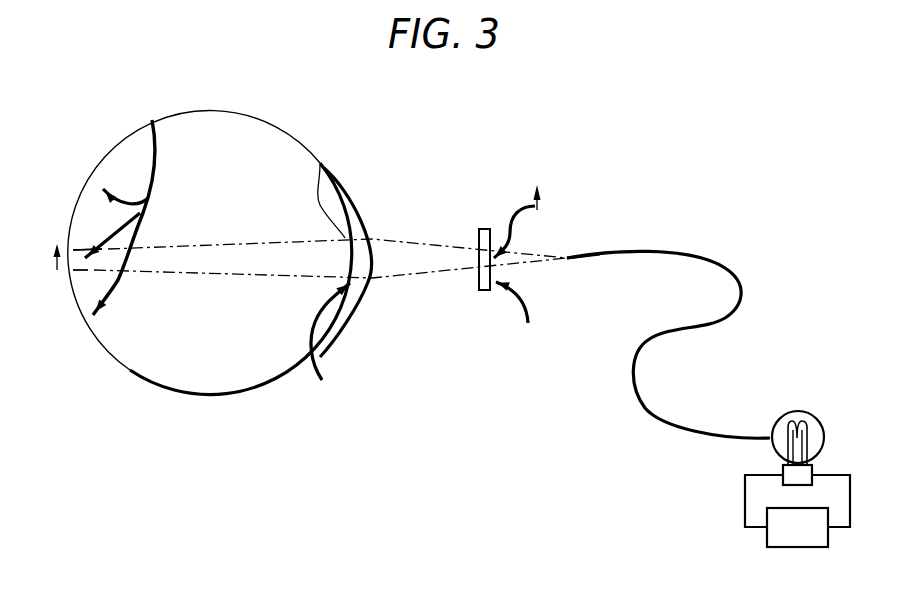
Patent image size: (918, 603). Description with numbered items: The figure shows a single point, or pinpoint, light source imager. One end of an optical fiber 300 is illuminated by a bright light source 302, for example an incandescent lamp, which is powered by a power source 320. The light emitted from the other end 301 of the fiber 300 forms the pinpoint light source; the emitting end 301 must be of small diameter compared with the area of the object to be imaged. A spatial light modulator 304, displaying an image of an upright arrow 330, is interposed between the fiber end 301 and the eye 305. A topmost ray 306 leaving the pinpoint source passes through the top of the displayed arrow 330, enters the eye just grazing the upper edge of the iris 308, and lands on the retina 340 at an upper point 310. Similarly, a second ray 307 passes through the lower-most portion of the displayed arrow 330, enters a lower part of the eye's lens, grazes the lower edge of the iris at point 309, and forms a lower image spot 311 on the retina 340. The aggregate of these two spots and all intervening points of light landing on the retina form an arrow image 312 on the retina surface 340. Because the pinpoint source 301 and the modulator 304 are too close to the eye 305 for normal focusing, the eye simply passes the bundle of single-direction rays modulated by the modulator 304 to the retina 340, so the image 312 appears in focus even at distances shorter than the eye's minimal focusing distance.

The optical fiber 300 is at (738, 310).
The emitting end of the optical fiber 301 is at (577, 258).
The bright light source 302 is at (820, 421).
The spatial light modulator 304 is at (510, 291).
The eye 305 is at (195, 400).
The topmost ray 306 is at (418, 243).
The second ray 307 is at (410, 277).
The iris 308 is at (320, 165).
The point at the lower edge of the iris 309 is at (328, 347).
The upper point 310 is at (88, 250).
The lower image spot 311 is at (85, 272).
The arrow image 312 is at (57, 268).
The power source 320 is at (797, 511).
The upright arrow 330 is at (538, 207).
The retina 340 is at (124, 203).